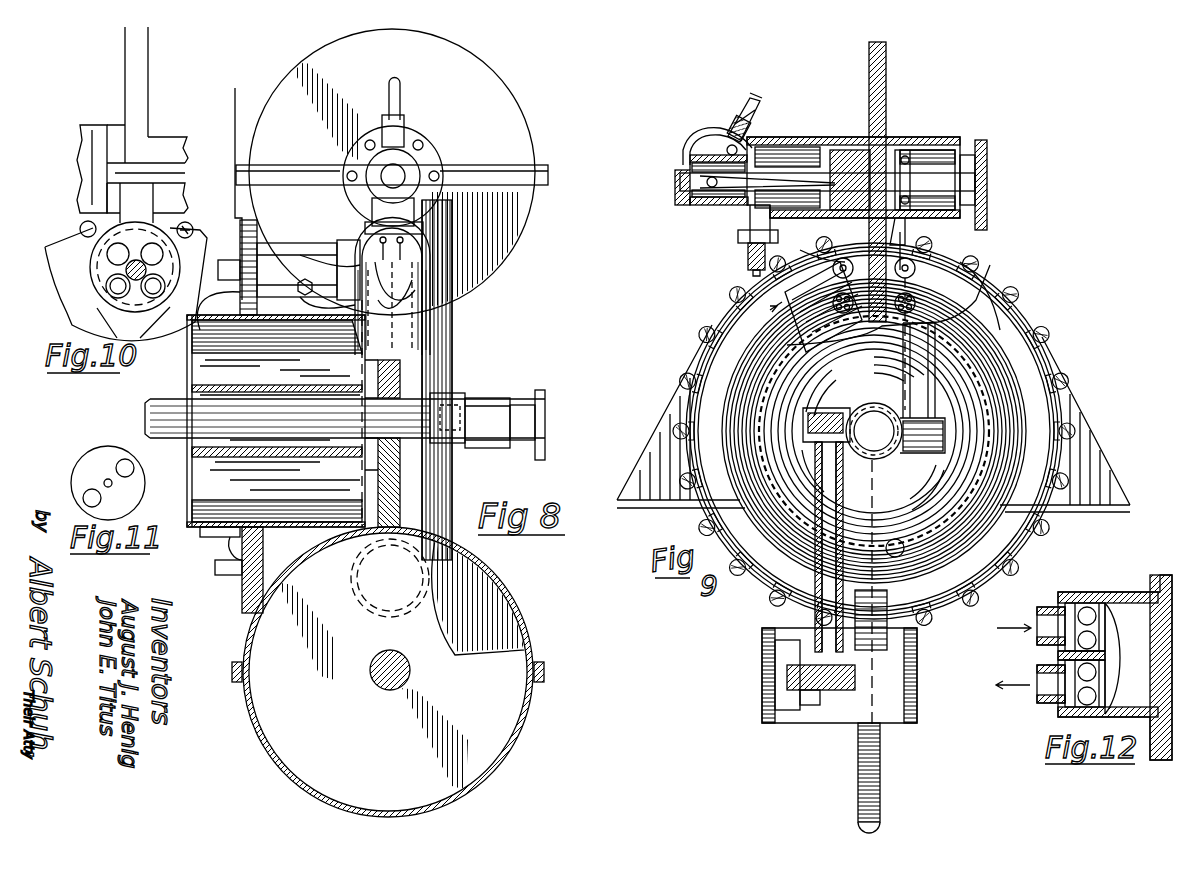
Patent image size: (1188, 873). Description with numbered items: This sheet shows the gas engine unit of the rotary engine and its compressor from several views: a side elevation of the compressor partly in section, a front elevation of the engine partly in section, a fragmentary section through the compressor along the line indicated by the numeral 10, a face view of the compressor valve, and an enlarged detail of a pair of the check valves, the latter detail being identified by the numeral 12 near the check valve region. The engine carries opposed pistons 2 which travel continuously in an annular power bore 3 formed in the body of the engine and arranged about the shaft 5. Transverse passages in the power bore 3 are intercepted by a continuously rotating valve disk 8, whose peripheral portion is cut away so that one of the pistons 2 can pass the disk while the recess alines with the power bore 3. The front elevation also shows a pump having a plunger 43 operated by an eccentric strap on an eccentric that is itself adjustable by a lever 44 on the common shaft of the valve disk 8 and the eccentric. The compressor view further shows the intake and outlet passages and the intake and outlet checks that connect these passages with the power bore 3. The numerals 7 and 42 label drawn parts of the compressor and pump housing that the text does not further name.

In FIG. 9, the piston 2 is at (745, 282).
In FIG. 9, the power bore 3 is at (972, 274).
In FIG. 8, the shaft 5 is at (150, 412).
In FIG. 9, the shaft 5 is at (880, 438).
In FIG. 8, the motor housing 7 is at (395, 497).
In FIG. 8, the valve disk 8 is at (305, 742).
In FIG. 9, the valve disk 8 is at (886, 122).
In FIG. 8, the motor unit 10 is at (231, 129).
In FIG. 9, the bearing 12 is at (900, 232).
In FIG. 9, the switch housing 42 is at (688, 190).
In FIG. 9, the plunger 43 is at (748, 226).
In FIG. 9, the lever 44 is at (742, 112).